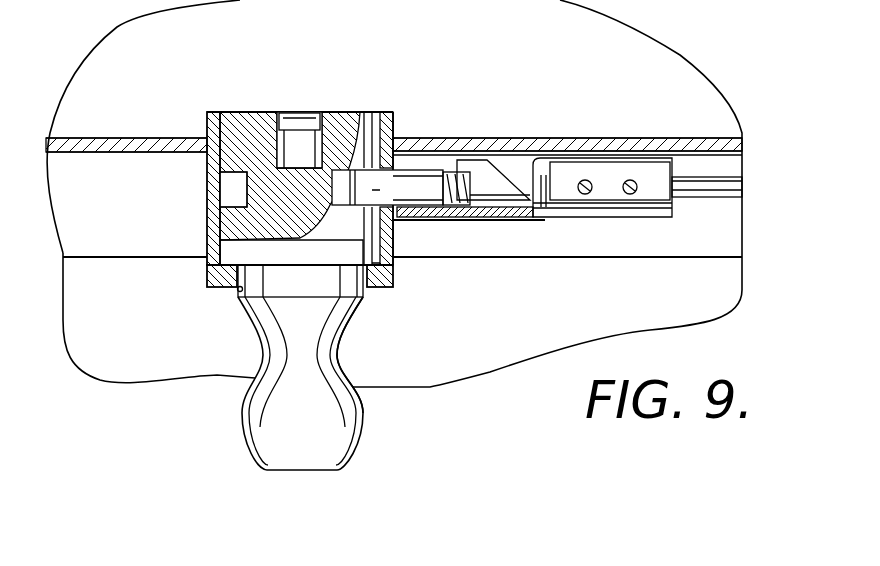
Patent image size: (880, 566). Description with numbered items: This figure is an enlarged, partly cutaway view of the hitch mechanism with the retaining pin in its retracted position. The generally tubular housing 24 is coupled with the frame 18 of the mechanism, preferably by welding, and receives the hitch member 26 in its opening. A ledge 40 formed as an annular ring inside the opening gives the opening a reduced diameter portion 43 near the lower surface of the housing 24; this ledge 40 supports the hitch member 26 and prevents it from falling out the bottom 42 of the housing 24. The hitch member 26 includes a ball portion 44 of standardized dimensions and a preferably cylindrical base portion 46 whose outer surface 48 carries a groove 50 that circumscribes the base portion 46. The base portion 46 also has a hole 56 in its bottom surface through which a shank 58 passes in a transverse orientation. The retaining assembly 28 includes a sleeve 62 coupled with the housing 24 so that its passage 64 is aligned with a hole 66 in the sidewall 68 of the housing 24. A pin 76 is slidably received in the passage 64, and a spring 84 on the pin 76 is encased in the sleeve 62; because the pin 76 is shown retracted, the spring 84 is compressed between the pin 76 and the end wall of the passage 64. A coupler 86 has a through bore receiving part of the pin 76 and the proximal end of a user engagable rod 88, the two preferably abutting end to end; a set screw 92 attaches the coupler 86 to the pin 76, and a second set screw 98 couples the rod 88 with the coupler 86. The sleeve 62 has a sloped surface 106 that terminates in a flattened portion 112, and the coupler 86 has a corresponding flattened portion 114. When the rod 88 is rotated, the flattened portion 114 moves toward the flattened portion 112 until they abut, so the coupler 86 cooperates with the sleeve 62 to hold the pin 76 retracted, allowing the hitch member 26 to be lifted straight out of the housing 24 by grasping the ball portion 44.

The frame 18 is at (692, 142).
The housing 24 is at (207, 133).
The hitch member 26 is at (243, 118).
The retaining assembly 28 is at (508, 210).
The ledge 40 is at (213, 245).
The bottom 42 is at (388, 288).
The reduced diameter portion 43 is at (238, 291).
The ball portion 44 is at (350, 373).
The base portion 46 is at (360, 110).
The outer surface 48 is at (211, 112).
The groove 50 is at (220, 178).
The hole 56 is at (287, 117).
The shank 58 is at (301, 127).
The sleeve 62 is at (403, 215).
The passage 64 is at (457, 210).
The hole 66 is at (398, 170).
The sidewall 68 is at (397, 250).
The pin 76 is at (425, 178).
The spring 84 is at (452, 170).
The coupler 86 is at (652, 215).
The user engagable rod 88 is at (747, 187).
The set screw 92 is at (588, 180).
The second set screw 98 is at (634, 180).
The sloped surface 106 is at (496, 167).
The flattened portion 112 is at (540, 217).
The flattened portion 114 is at (543, 173).